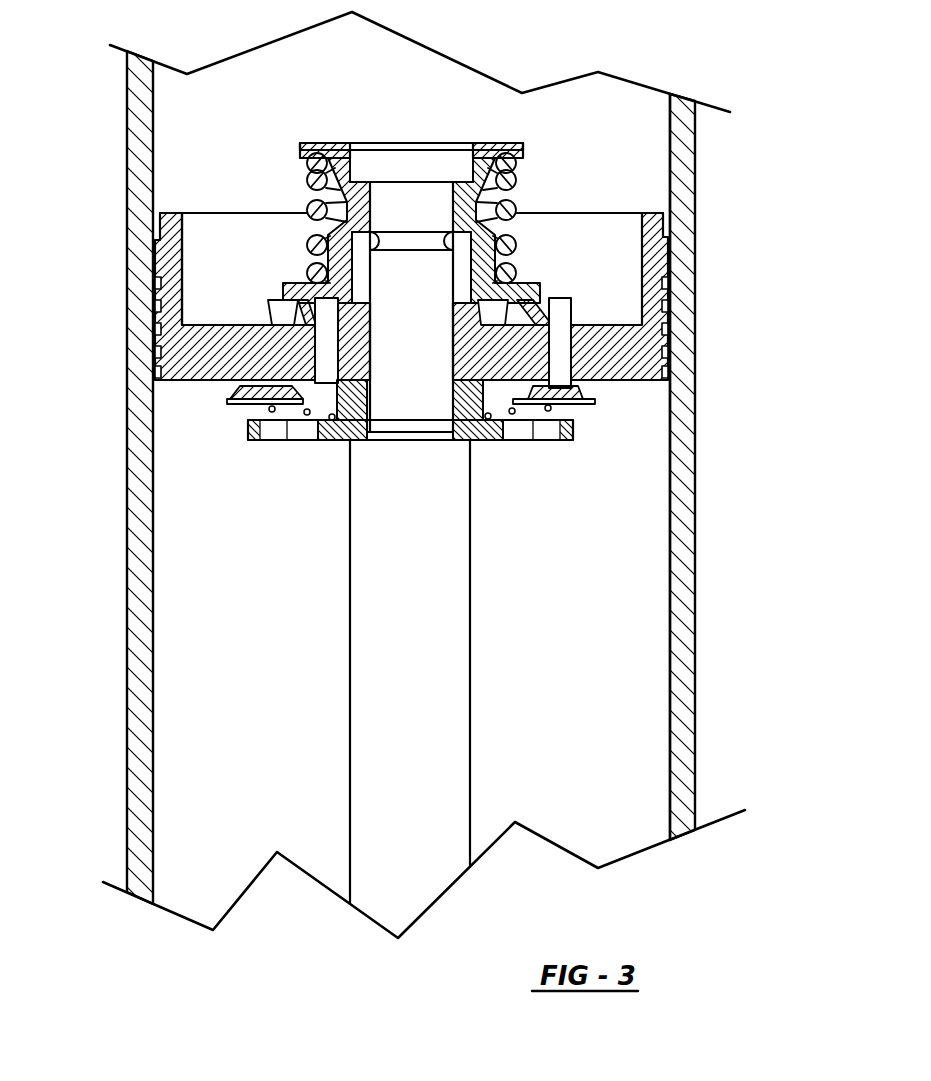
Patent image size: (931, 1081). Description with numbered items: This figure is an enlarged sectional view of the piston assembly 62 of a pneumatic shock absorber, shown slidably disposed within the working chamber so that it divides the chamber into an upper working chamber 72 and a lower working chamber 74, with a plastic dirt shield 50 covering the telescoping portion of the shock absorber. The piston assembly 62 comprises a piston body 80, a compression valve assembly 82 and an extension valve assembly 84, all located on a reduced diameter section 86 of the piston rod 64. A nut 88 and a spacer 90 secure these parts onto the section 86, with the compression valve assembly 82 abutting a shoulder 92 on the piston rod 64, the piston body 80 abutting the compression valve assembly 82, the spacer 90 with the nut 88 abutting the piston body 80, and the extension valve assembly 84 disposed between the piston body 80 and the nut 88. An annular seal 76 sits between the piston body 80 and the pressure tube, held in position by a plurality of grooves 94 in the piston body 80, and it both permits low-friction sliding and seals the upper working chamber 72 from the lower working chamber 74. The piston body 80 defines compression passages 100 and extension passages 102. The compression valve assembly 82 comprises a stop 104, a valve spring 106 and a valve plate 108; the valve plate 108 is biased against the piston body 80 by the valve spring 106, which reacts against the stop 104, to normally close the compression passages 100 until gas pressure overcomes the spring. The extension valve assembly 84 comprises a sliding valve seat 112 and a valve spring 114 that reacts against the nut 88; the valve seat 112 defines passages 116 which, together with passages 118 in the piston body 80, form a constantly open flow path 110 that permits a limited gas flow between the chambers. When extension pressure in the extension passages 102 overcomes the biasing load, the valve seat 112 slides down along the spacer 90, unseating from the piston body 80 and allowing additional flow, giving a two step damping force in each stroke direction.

The plastic dirt shield 50 is at (678, 597).
The piston assembly 62 is at (608, 488).
The piston rod 64 is at (419, 685).
The upper working chamber 72 is at (430, 95).
The lower working chamber 74 is at (244, 670).
The seal 76 is at (695, 292).
The piston body 80 is at (643, 357).
The compression valve assembly 82 is at (615, 427).
The extension valve assembly 84 is at (607, 212).
The reduced diameter section 86 is at (422, 362).
The nut 88 is at (323, 143).
The spacer 90 is at (463, 257).
The shoulder 92 is at (383, 418).
The grooves 94 is at (160, 328).
The compression passages 100 is at (560, 360).
The extension passages 102 is at (327, 357).
The stop 104 is at (253, 441).
The valve spring 106 is at (252, 407).
The valve plate 108 is at (265, 410).
The flow path 110 is at (250, 309).
The sliding valve seat 112 is at (535, 305).
The valve spring 114 is at (510, 180).
The passages 116 is at (282, 313).
The passages 118 is at (303, 310).